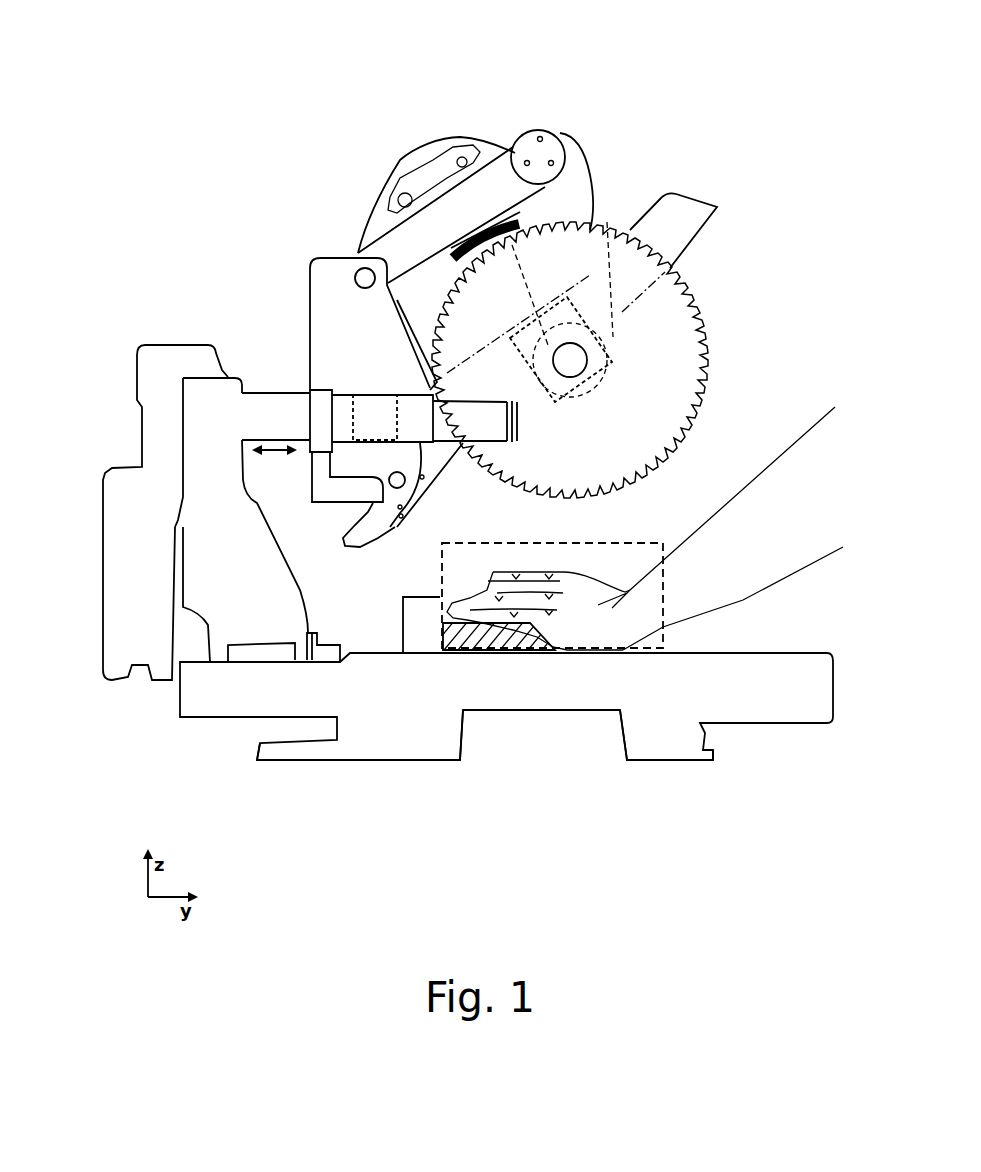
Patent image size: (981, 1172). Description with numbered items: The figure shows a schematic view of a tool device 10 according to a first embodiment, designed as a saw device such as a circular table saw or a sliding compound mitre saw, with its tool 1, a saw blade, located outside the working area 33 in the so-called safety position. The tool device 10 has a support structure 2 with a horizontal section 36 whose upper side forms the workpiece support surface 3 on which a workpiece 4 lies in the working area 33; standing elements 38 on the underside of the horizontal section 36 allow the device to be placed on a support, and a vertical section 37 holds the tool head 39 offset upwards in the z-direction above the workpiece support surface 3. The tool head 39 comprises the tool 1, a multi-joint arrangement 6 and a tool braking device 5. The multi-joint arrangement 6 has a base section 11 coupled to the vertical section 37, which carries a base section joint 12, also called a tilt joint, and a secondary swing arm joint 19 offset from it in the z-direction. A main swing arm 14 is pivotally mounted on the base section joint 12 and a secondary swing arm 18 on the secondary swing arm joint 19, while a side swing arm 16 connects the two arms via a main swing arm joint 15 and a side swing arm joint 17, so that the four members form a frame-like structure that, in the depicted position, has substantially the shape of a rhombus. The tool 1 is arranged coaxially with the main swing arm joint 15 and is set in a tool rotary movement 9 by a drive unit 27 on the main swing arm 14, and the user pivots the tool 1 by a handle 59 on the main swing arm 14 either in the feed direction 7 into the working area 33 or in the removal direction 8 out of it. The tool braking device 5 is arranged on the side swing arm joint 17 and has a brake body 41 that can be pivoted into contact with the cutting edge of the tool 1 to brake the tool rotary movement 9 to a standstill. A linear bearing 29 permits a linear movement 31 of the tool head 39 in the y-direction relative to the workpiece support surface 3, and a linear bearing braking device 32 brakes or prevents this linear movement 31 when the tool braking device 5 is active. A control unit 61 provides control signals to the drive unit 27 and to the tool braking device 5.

The tool 1 is at (685, 340).
The support structure 2 is at (472, 552).
The workpiece support surface 3 is at (515, 652).
The workpiece 4 is at (465, 642).
The tool braking device 5 is at (480, 237).
The multi-joint arrangement 6 is at (342, 267).
The feed direction 7 is at (590, 405).
The removal direction 8 is at (550, 338).
The tool rotary movement 9 is at (602, 293).
The tool device 10 is at (146, 84).
The base section 11 is at (318, 313).
The base section joint 12 is at (399, 482).
The main swing arm 14 is at (521, 395).
The main swing arm joint 15 is at (575, 362).
The side swing arm 16 is at (565, 195).
The side swing arm joint 17 is at (533, 153).
The secondary swing arm 18 is at (453, 213).
The secondary swing arm joint 19 is at (362, 277).
The drive unit 27 is at (559, 283).
The linear bearing 29 is at (297, 413).
The linear movement 31 is at (274, 464).
The linear bearing braking device 32 is at (373, 412).
The working area 33 is at (552, 585).
The horizontal section 36 is at (812, 703).
The vertical section 37 is at (202, 478).
The standing elements 38 is at (373, 750).
The tool head 39 is at (576, 272).
The brake body 41 is at (507, 220).
The handle 59 is at (697, 218).
The control unit 61 is at (565, 317).